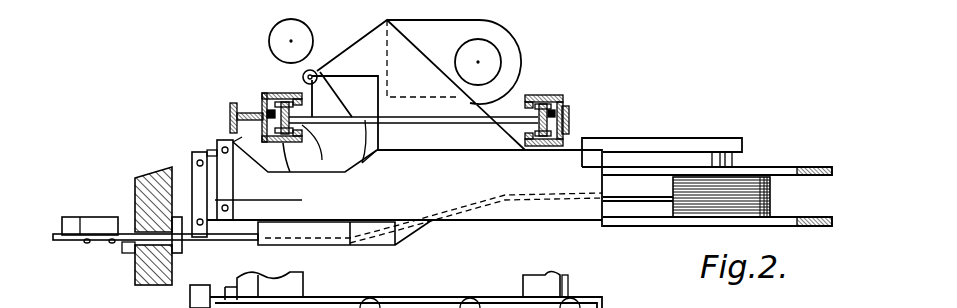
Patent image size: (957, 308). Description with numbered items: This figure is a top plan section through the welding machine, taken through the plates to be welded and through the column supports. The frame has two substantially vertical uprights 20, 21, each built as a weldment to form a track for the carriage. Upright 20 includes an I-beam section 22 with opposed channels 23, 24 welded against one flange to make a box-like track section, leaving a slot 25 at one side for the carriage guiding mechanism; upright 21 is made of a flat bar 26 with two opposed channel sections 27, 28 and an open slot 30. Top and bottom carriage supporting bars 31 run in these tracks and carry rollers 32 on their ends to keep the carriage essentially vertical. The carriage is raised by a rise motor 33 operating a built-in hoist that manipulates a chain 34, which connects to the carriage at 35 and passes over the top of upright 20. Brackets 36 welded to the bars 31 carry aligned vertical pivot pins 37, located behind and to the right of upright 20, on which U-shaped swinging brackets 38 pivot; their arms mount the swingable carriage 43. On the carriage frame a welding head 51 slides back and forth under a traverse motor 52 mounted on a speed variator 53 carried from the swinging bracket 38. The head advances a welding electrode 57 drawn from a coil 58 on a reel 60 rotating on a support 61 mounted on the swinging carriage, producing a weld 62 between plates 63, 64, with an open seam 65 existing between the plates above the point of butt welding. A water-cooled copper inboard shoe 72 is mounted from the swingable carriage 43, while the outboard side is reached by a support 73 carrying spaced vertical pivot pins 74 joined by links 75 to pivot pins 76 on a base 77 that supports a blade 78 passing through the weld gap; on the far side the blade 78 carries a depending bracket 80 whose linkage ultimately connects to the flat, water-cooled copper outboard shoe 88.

The upright 20 is at (262, 95).
The upright 21 is at (557, 97).
The I-beam section 22 is at (233, 114).
The channel 23 is at (280, 93).
The channel 24 is at (298, 140).
The slot 25 is at (303, 125).
The flat bar 26 is at (570, 118).
The channel section 27 is at (538, 95).
The channel section 28 is at (533, 147).
The open slot 30 is at (527, 126).
The carriage supporting bar 31 is at (377, 150).
The roller 32 is at (292, 175).
The rise motor 33 is at (273, 37).
The chain 34 is at (262, 100).
The chain connection 35 is at (248, 142).
The bracket 36 is at (327, 101).
The pivot pin 37 is at (318, 76).
The swinging bracket 38 is at (413, 133).
The swingable carriage 43 is at (404, 188).
The welding head 51 is at (318, 232).
The traverse motor 52 is at (472, 52).
The speed variator 53 is at (513, 50).
The welding electrode 57 is at (603, 200).
The coil 58 is at (770, 191).
The reel 60 is at (752, 170).
The support 61 is at (690, 138).
The weld 62 is at (133, 202).
The plate 63 is at (135, 284).
The plate 64 is at (138, 176).
The open seam 65 is at (176, 258).
The inboard shoe 72 is at (178, 253).
The support 73 is at (227, 180).
The pivot pin 74 is at (220, 150).
The link 75 is at (271, 204).
The pivot pin 76 is at (197, 163).
The base 77 is at (193, 192).
The blade 78 is at (125, 247).
The depending bracket 80 is at (83, 220).
The outboard shoe 88 is at (128, 227).